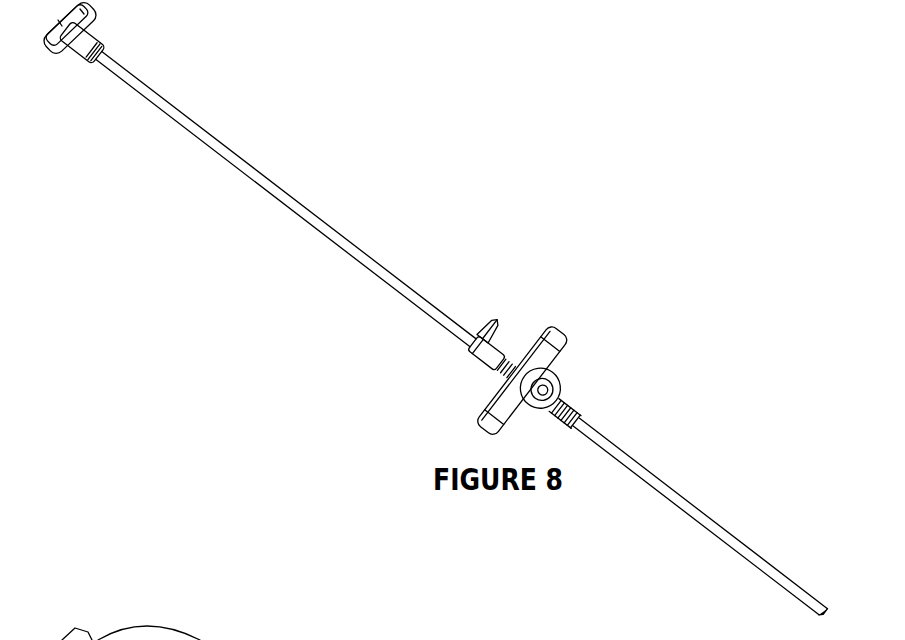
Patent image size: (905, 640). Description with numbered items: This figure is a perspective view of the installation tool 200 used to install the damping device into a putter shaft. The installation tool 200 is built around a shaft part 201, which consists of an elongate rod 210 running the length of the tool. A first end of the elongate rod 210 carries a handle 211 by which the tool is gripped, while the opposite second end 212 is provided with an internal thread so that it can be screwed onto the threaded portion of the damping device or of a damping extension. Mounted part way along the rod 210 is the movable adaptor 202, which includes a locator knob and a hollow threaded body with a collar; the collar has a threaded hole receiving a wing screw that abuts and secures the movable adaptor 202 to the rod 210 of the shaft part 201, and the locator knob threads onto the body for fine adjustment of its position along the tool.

The installation tool 200 is at (618, 127).
The shaft part 201 is at (346, 195).
The movable adaptor 202 is at (620, 339).
The elongate rod 210 is at (728, 543).
The handle 211 is at (92, 23).
The second end 212 is at (823, 615).